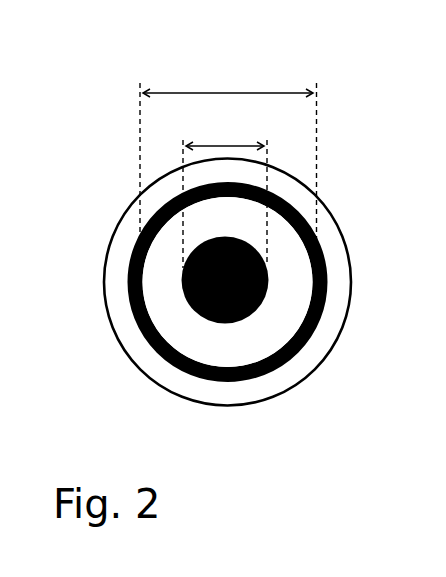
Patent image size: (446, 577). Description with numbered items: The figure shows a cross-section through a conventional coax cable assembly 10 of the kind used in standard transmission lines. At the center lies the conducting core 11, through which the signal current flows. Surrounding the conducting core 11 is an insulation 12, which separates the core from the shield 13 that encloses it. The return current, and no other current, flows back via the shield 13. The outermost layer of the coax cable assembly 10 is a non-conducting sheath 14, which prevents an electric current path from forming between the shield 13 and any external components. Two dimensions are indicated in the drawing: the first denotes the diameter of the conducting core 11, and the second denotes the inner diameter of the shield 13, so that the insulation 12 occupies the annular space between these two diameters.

The coax cable assembly 10 is at (224, 253).
The conducting core 11 is at (200, 315).
The insulation 12 is at (229, 339).
The shield 13 is at (288, 362).
The non-conducting sheath 14 is at (320, 347).